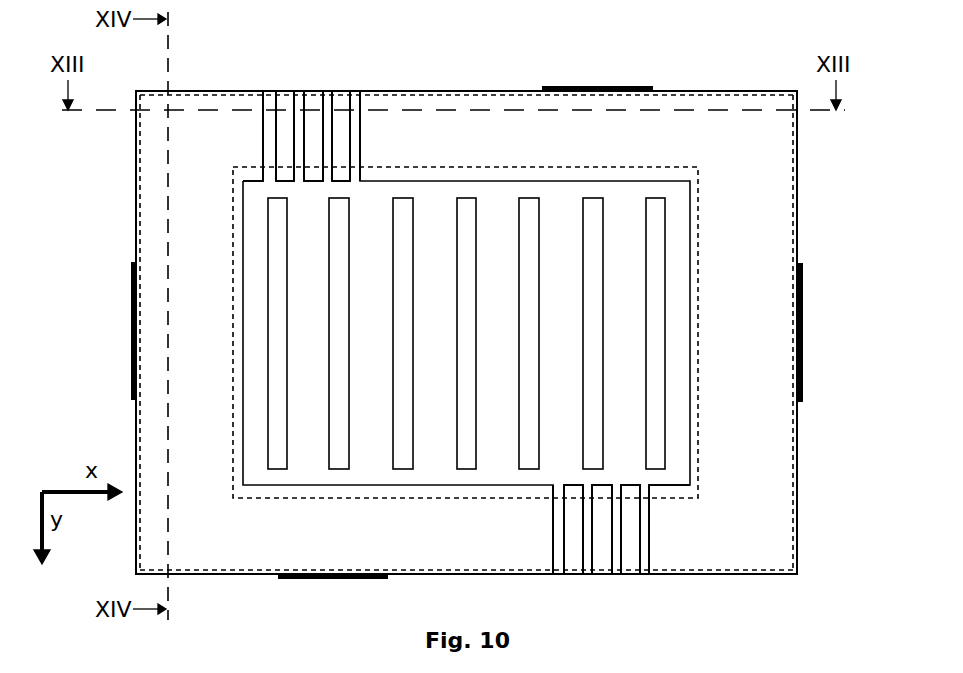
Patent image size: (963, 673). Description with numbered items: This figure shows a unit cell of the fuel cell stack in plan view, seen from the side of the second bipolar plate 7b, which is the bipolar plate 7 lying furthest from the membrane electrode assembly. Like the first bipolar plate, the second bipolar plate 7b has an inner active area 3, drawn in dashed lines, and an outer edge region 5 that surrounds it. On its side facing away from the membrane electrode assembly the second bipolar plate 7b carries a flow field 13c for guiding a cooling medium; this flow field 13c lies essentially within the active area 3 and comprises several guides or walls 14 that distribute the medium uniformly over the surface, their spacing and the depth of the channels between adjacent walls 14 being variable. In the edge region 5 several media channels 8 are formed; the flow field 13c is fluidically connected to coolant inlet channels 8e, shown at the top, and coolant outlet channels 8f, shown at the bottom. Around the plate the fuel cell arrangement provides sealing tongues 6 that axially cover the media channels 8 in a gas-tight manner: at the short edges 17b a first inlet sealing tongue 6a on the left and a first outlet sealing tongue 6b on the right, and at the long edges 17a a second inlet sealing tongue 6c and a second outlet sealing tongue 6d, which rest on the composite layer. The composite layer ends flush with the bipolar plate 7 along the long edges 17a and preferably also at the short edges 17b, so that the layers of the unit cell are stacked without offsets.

The active area 3 is at (415, 168).
The edge region 5 is at (246, 110).
The sealing tongue 6 is at (467, 332).
The first inlet sealing tongue 6a is at (133, 394).
The first outlet sealing tongue 6b is at (800, 360).
The second inlet sealing tongue 6c is at (636, 88).
The second outlet sealing tongue 6d is at (345, 560).
The bipolar plate 7 is at (780, 532).
The second bipolar plate 7b is at (466, 332).
The media channels 8 is at (466, 332).
The coolant inlet channels 8e is at (333, 124).
The coolant outlet channels 8f is at (619, 532).
The flow field 13c is at (292, 342).
The walls 14 is at (660, 257).
The long edges 17a is at (526, 91).
The short edges 17b is at (136, 202).